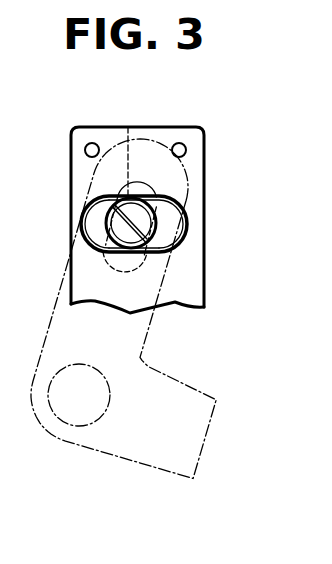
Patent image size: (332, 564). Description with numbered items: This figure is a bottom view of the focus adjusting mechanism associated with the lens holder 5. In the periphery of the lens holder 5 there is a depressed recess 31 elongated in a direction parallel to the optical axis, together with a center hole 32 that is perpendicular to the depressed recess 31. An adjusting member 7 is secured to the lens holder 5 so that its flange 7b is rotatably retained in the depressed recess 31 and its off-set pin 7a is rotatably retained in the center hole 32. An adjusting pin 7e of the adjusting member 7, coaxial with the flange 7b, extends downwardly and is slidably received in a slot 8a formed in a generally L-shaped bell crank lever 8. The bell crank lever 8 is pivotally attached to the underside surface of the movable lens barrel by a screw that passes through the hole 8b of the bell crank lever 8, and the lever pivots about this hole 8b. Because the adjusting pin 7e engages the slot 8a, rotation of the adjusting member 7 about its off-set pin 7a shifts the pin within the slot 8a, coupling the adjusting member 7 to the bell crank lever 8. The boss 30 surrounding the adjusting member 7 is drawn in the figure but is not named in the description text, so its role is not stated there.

The lens holder 5 is at (71, 151).
The adjusting member 7 is at (157, 221).
The off-set pin 7a is at (107, 248).
The flange 7b is at (162, 243).
The adjusting pin 7e is at (106, 224).
The bell crank lever 8 is at (193, 392).
The slot 8a is at (149, 184).
The hole 8b is at (71, 428).
The elongated boss 30 is at (170, 197).
The depressed recess 31 is at (183, 232).
The center hole 32 is at (128, 127).